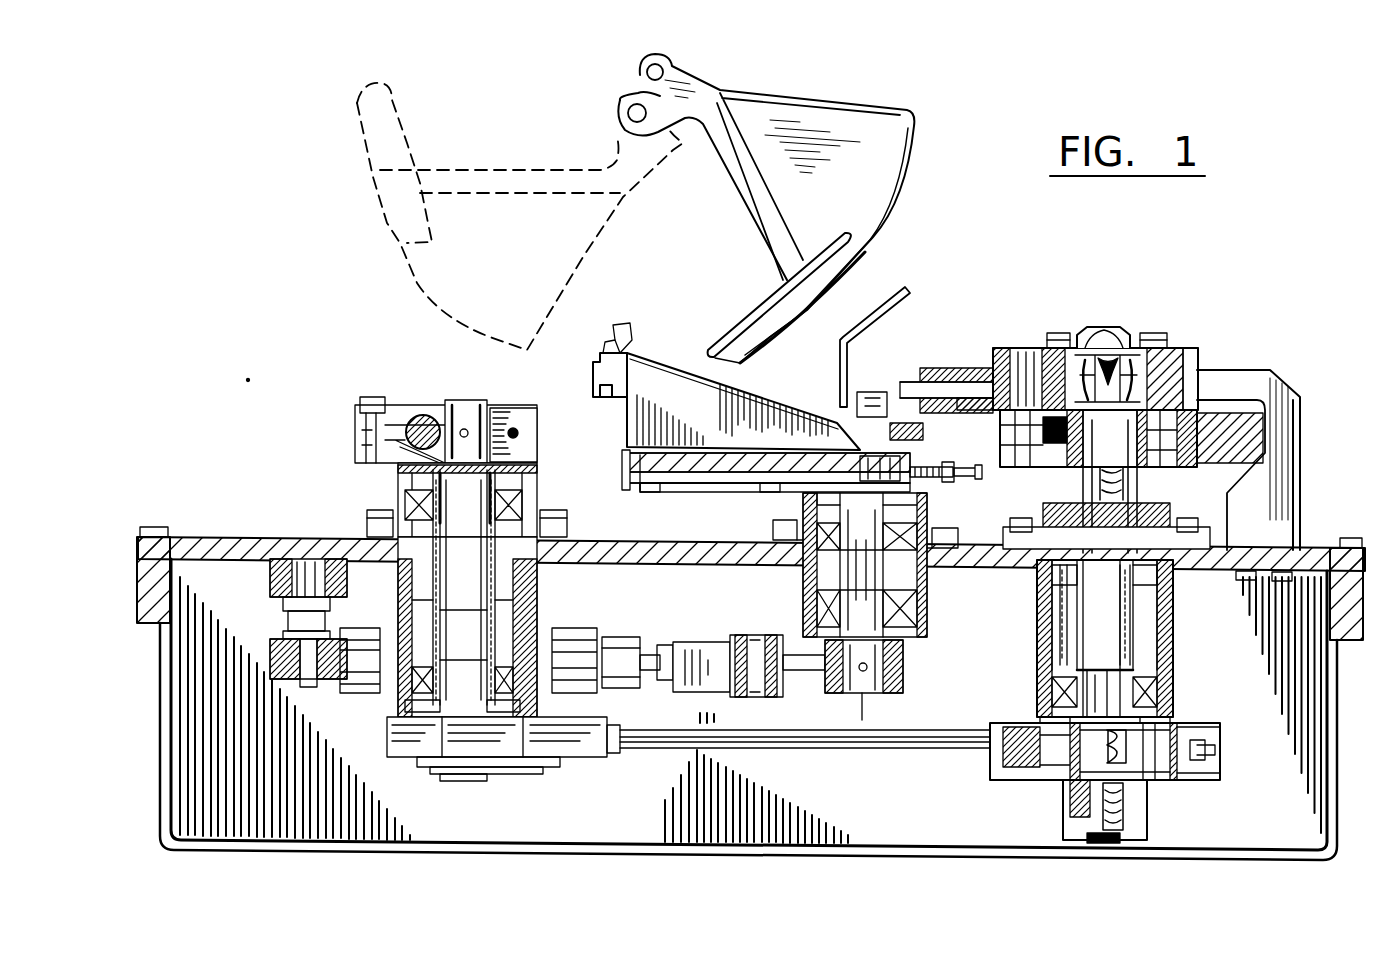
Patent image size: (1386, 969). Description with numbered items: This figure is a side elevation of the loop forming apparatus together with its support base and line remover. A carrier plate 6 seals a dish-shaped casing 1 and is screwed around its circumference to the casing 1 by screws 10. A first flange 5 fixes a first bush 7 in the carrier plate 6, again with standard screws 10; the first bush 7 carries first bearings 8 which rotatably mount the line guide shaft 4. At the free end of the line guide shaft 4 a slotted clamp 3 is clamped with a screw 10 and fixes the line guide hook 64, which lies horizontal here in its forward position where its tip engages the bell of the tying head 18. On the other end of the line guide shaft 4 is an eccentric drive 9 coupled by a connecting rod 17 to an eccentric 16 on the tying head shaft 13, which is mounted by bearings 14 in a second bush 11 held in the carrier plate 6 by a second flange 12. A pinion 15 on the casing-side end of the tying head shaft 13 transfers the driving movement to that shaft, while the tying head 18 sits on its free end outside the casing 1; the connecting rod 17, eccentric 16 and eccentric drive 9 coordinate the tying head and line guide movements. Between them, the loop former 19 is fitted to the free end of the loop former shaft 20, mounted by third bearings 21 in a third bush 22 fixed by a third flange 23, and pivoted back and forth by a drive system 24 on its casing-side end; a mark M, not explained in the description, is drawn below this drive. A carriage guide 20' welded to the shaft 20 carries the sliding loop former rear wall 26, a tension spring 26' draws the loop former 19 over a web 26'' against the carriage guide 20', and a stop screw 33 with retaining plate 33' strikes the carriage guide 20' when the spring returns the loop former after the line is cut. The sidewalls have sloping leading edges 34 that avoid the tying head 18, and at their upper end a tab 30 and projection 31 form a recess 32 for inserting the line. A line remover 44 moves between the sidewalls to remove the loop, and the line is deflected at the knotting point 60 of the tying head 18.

The dish-shaped casing 1 is at (160, 660).
The clamp 3 is at (395, 405).
The line guide shaft 4 is at (466, 400).
The first flange 5 is at (398, 525).
The carrier plate 6 is at (218, 548).
The first bush 7 is at (537, 600).
The first bearings 8 is at (405, 490).
The eccentric drive 9 is at (572, 750).
The screws 10 is at (150, 527).
The second bush 11 is at (1158, 660).
The second flange 12 is at (1205, 540).
The tying head shaft 13 is at (1130, 650).
The bearings 14 is at (1158, 600).
The pinion 15 is at (1138, 805).
The eccentric 16 is at (1160, 777).
The connecting rod 17 is at (648, 748).
The tying head 18 is at (960, 383).
The loop former 19 is at (790, 422).
The loop former shaft 20 is at (894, 666).
The carriage guide 20' is at (803, 496).
The third bearings 21 is at (803, 612).
The third bush 22 is at (927, 625).
The third flange 23 is at (927, 575).
The drive system 24 is at (728, 690).
The loop former rear wall 26 is at (766, 493).
The tension spring 26' is at (678, 543).
The web 26'' is at (771, 539).
The tab 30 is at (593, 410).
The projection 31 is at (625, 312).
The recess 32 is at (605, 345).
The stop screw 33 is at (999, 482).
The retaining plate 33' is at (950, 490).
The leading edges 34 is at (752, 383).
The line remover 44 is at (870, 250).
The knotting point 60 is at (872, 395).
The line guide hook 64 is at (421, 415).
The center line M is at (862, 713).